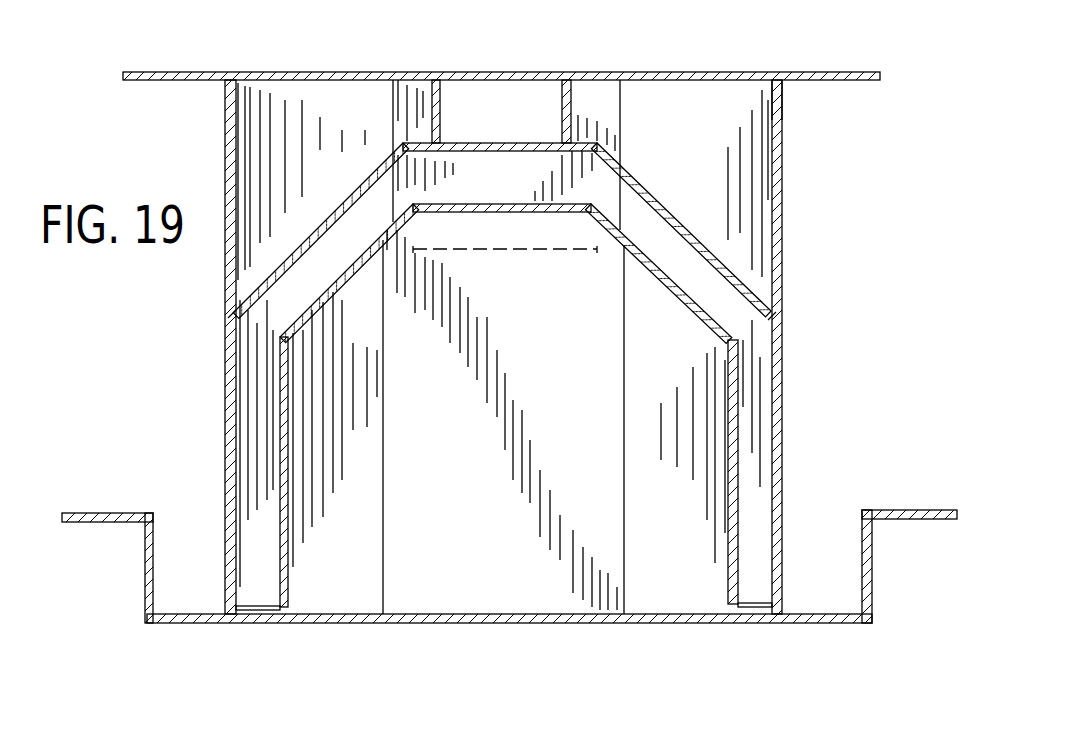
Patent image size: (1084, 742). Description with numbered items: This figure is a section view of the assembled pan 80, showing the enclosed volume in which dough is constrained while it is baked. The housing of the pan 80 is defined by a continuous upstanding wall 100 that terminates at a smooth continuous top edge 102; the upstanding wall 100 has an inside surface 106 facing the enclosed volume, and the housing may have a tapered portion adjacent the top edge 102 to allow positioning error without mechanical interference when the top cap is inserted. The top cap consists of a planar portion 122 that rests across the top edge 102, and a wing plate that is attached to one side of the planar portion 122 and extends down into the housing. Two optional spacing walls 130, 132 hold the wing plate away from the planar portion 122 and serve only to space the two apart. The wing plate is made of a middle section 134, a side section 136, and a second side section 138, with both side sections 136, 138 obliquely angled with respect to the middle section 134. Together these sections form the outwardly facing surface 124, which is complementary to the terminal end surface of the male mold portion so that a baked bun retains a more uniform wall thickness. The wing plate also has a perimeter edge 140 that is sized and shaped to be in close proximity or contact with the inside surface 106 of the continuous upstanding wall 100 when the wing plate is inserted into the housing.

The pan 80 is at (198, 33).
The planar portion 122 is at (830, 71).
The top edge 102 is at (783, 79).
The continuous upstanding wall 100 is at (795, 218).
The inside surface 106 is at (776, 374).
The perimeter edge 140 is at (233, 320).
The outwardly facing surface 124 is at (343, 234).
The side section 136 is at (348, 206).
The second side section 138 is at (665, 200).
The middle section 134 is at (508, 143).
The spacing wall 130 is at (494, 58).
The spacing wall 132 is at (565, 108).